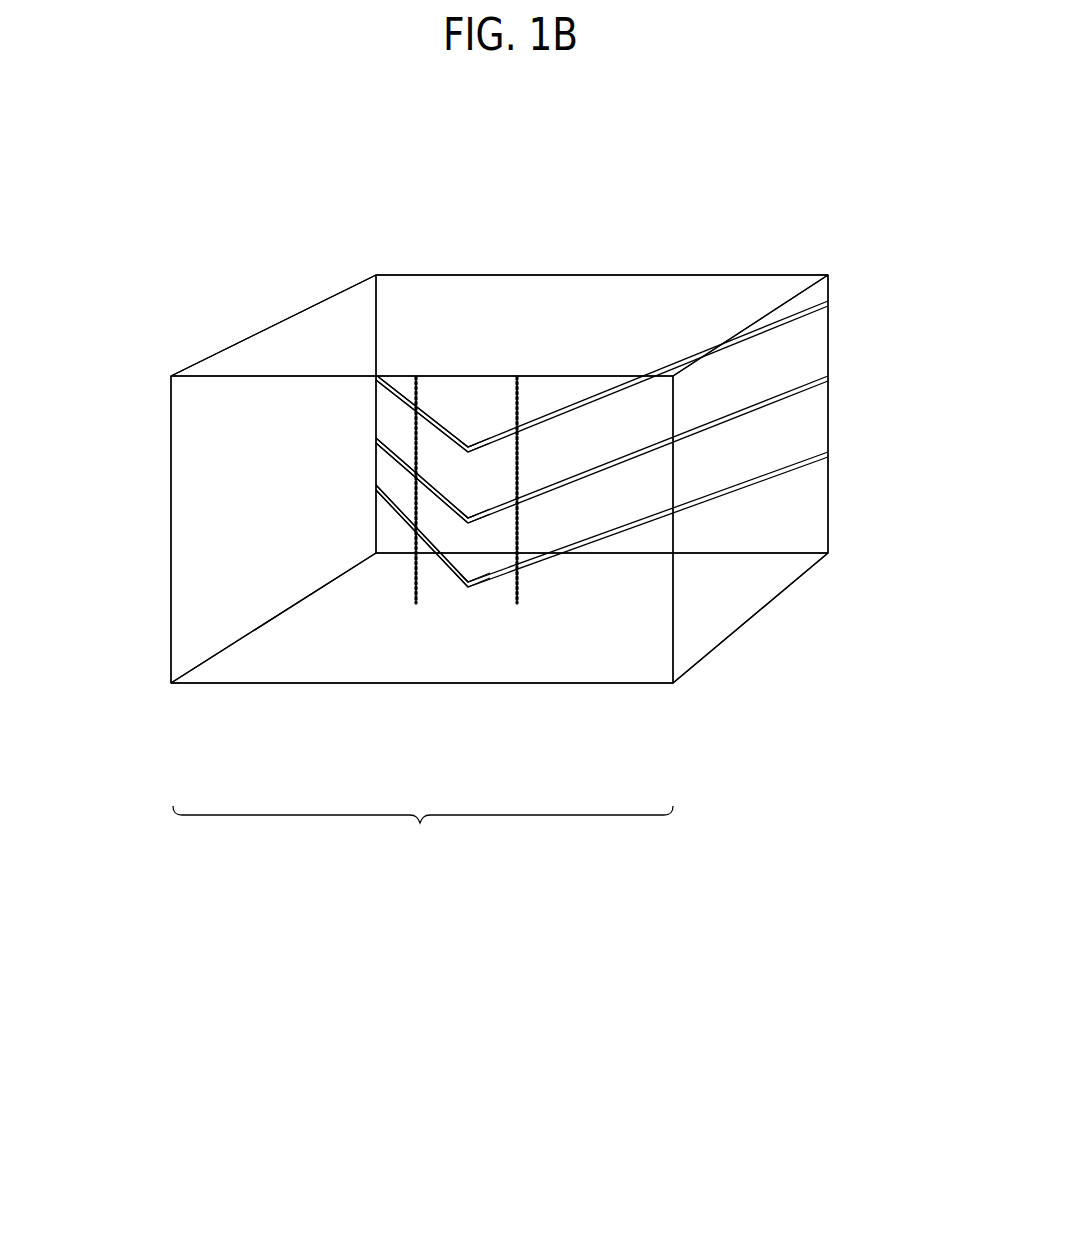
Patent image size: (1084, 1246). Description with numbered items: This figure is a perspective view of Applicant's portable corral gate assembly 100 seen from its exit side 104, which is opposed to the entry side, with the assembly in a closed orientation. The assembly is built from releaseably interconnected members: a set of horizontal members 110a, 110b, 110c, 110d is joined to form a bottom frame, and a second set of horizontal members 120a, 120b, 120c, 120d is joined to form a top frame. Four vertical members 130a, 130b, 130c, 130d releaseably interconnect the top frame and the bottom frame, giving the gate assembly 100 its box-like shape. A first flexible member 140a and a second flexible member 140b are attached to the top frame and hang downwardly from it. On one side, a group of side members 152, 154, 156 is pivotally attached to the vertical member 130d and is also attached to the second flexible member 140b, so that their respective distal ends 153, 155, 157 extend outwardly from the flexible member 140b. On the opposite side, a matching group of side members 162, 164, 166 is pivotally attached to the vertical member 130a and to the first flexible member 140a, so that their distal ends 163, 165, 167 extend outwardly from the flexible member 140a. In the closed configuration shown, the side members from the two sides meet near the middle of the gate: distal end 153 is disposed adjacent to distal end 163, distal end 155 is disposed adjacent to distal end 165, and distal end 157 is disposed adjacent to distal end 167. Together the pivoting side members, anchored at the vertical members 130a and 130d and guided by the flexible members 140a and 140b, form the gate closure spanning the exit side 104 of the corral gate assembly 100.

The portable corral gate assembly 100 is at (443, 988).
The exit side 104 is at (423, 832).
The horizontal member 110a is at (688, 553).
The horizontal member 110b is at (227, 648).
The horizontal member 110c is at (453, 683).
The horizontal member 110d is at (763, 610).
The horizontal member 120a is at (637, 275).
The horizontal member 120b is at (292, 317).
The horizontal member 120c is at (270, 374).
The horizontal member 120d is at (777, 310).
The vertical member 130a is at (373, 337).
The vertical member 130b is at (171, 503).
The vertical member 130c is at (673, 567).
The vertical member 130d is at (828, 532).
The first flexible member 140a is at (414, 567).
The second flexible member 140b is at (519, 582).
The side member 152 is at (795, 315).
The side member 154 is at (790, 397).
The side member 156 is at (793, 468).
The distal end 153 is at (475, 442).
The distal end 155 is at (477, 517).
The distal end 157 is at (490, 573).
The side member 162 is at (413, 402).
The side member 164 is at (405, 461).
The side member 166 is at (405, 521).
The distal end 163 is at (462, 440).
The distal end 165 is at (457, 505).
The distal end 167 is at (467, 575).